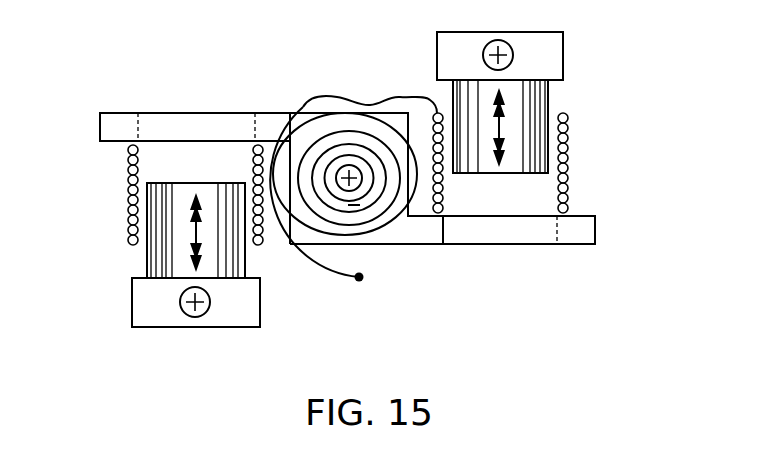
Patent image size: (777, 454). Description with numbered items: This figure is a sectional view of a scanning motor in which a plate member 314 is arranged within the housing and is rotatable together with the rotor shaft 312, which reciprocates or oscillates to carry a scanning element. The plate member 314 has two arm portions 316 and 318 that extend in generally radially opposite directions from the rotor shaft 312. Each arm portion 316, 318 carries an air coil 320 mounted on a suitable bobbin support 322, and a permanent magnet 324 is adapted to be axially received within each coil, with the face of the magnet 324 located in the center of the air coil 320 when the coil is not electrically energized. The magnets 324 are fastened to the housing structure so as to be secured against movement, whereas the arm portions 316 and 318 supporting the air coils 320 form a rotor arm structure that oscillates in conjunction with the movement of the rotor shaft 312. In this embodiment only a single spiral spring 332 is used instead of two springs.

The rotor shaft 312 is at (360, 190).
The plate member 314 is at (195, 113).
The arm portion 316 is at (120, 113).
The arm portion 318 is at (498, 247).
The air coil 320 is at (130, 218).
The bobbin support 322 is at (175, 163).
The permanent magnet 324 is at (145, 257).
The spiral spring 332 is at (317, 273).